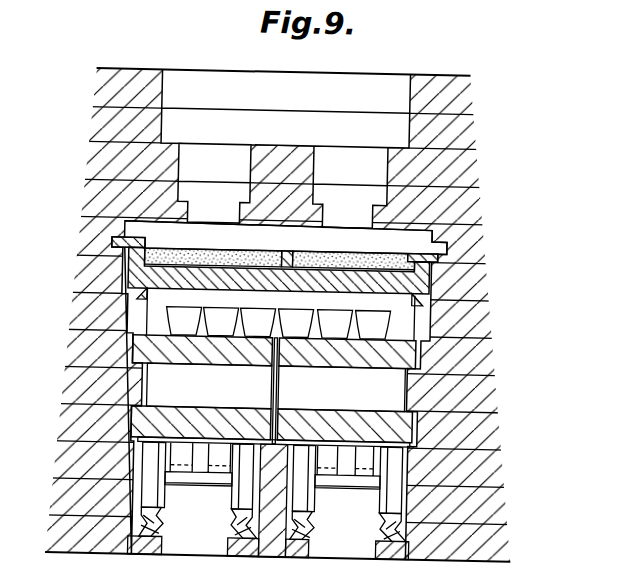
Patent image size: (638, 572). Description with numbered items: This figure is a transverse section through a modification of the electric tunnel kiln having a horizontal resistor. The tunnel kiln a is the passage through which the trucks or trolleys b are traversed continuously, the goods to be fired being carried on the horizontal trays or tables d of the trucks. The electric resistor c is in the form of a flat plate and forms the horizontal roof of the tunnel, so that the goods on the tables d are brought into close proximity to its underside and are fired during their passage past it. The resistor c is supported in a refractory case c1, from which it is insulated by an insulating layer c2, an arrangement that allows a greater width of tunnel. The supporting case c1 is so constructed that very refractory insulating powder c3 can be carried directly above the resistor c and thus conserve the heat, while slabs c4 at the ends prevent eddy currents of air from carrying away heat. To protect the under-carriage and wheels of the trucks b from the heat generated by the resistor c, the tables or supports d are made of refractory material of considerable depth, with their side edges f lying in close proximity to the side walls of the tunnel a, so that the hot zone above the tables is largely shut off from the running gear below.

The tunnel kiln a is at (410, 314).
The trucks or trolleys b is at (276, 387).
The electric resistor c is at (383, 285).
The refractory case c1 is at (453, 247).
The insulating layer c2 is at (440, 273).
The refractory insulating powder c3 is at (302, 252).
The slabs c4 is at (524, 203).
The trays or tables d is at (162, 325).
The side edges f is at (137, 340).